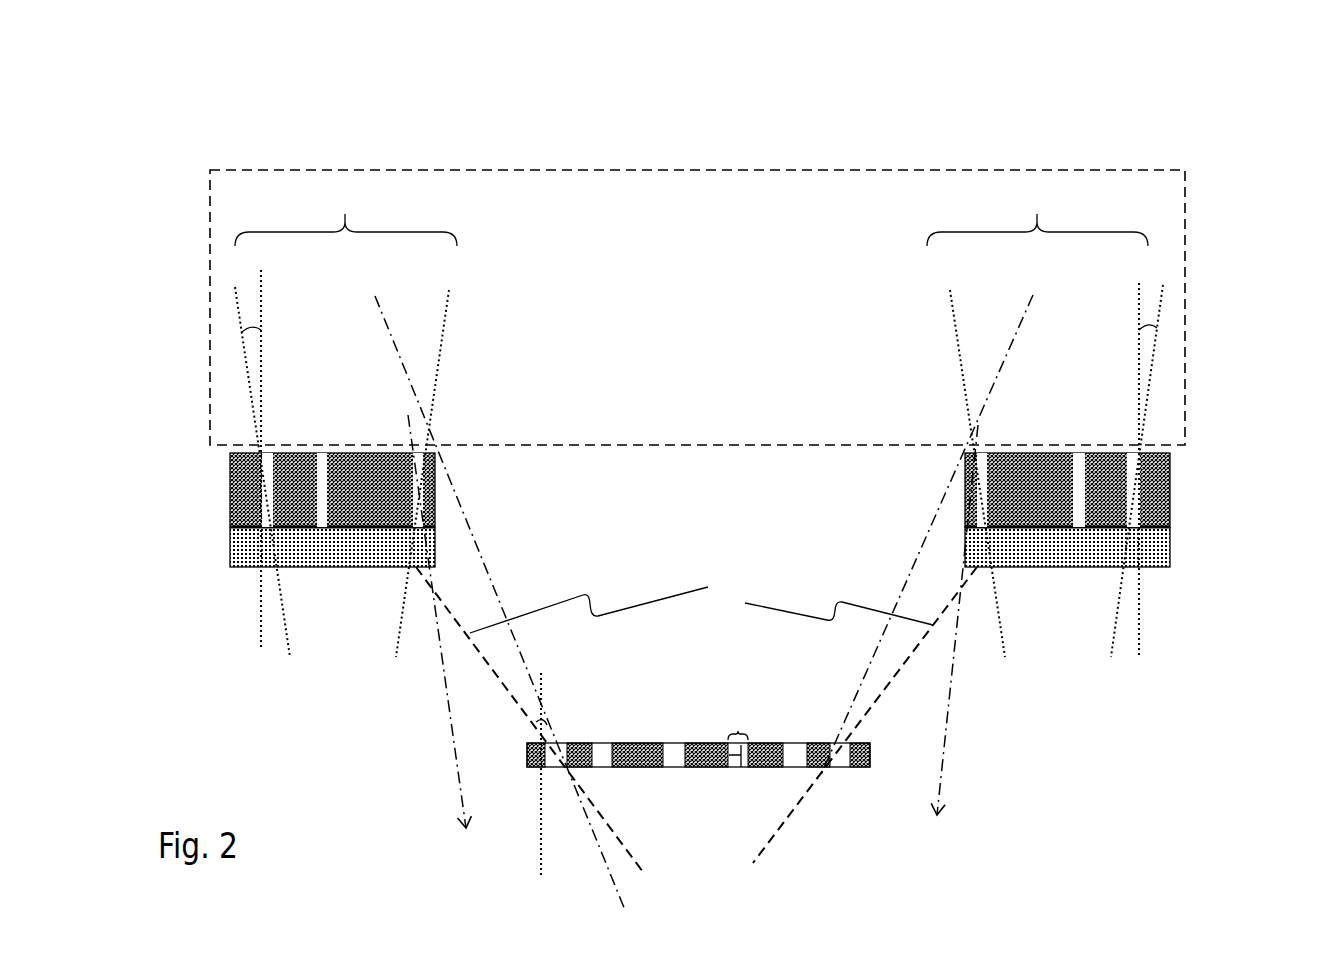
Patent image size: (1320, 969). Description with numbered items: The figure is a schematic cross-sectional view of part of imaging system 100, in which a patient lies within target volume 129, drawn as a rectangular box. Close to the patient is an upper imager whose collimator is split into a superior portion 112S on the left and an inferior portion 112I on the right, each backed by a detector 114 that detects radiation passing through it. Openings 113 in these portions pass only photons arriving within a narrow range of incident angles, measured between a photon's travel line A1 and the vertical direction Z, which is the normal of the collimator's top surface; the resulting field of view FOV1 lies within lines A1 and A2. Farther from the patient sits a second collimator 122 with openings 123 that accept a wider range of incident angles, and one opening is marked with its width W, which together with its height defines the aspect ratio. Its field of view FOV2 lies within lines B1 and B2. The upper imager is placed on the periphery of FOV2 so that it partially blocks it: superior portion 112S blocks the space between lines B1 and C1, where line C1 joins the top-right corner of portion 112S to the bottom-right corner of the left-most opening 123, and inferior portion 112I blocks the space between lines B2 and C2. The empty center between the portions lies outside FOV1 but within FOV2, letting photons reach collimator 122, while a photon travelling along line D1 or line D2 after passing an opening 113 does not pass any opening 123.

The imaging system 100 is at (126, 126).
The superior portion 112S is at (227, 492).
The inferior portion 112I is at (1172, 492).
The openings 113 is at (410, 460).
The detector 114 is at (230, 557).
The collimator 122 is at (697, 768).
The openings 123 is at (672, 764).
The target volume 129 is at (643, 445).
The field of view of collimator 112 FOV1 is at (691, 213).
The field of view of collimator 122 FOV2 is at (701, 602).
The line A1 is at (692, 459).
The line A2 is at (700, 459).
The line B1 is at (529, 730).
The line B2 is at (859, 731).
The line C1 is at (500, 603).
The line C2 is at (926, 536).
The line D1 is at (440, 639).
The line D2 is at (951, 637).
The vertical direction Z is at (724, 590).
The width W is at (739, 738).